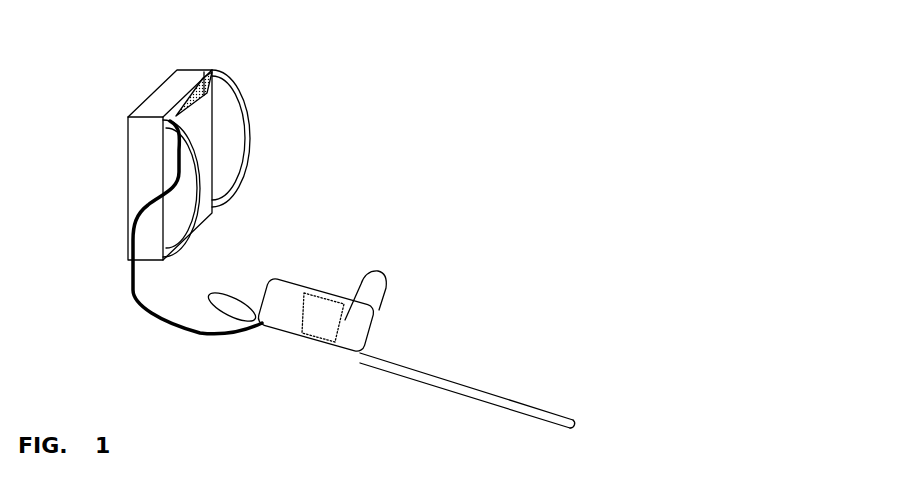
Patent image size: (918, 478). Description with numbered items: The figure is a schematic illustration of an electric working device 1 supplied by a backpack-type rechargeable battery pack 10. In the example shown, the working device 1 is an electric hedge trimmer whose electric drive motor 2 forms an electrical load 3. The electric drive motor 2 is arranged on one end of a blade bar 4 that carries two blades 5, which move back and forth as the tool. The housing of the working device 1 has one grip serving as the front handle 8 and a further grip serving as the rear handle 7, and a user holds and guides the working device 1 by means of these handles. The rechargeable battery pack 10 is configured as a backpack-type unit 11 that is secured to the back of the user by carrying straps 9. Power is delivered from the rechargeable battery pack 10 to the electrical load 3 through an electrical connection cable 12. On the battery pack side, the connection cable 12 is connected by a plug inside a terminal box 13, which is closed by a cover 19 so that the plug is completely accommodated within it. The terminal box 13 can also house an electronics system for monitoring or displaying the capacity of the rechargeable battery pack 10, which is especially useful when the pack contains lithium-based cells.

The electric working device 1 is at (485, 292).
The electric drive motor 2 is at (300, 327).
The electrical load 3 is at (297, 282).
The blade bar 4 is at (475, 387).
The blades 5 is at (540, 410).
The rear handle 7 is at (240, 293).
The front handle 8 is at (387, 275).
The carrying straps 9 is at (247, 118).
The rechargeable battery pack 10 is at (208, 163).
The backpack-type unit 11 is at (117, 137).
The electrical connection cable 12 is at (135, 290).
The terminal box 13 is at (176, 88).
The cover 19 is at (192, 82).